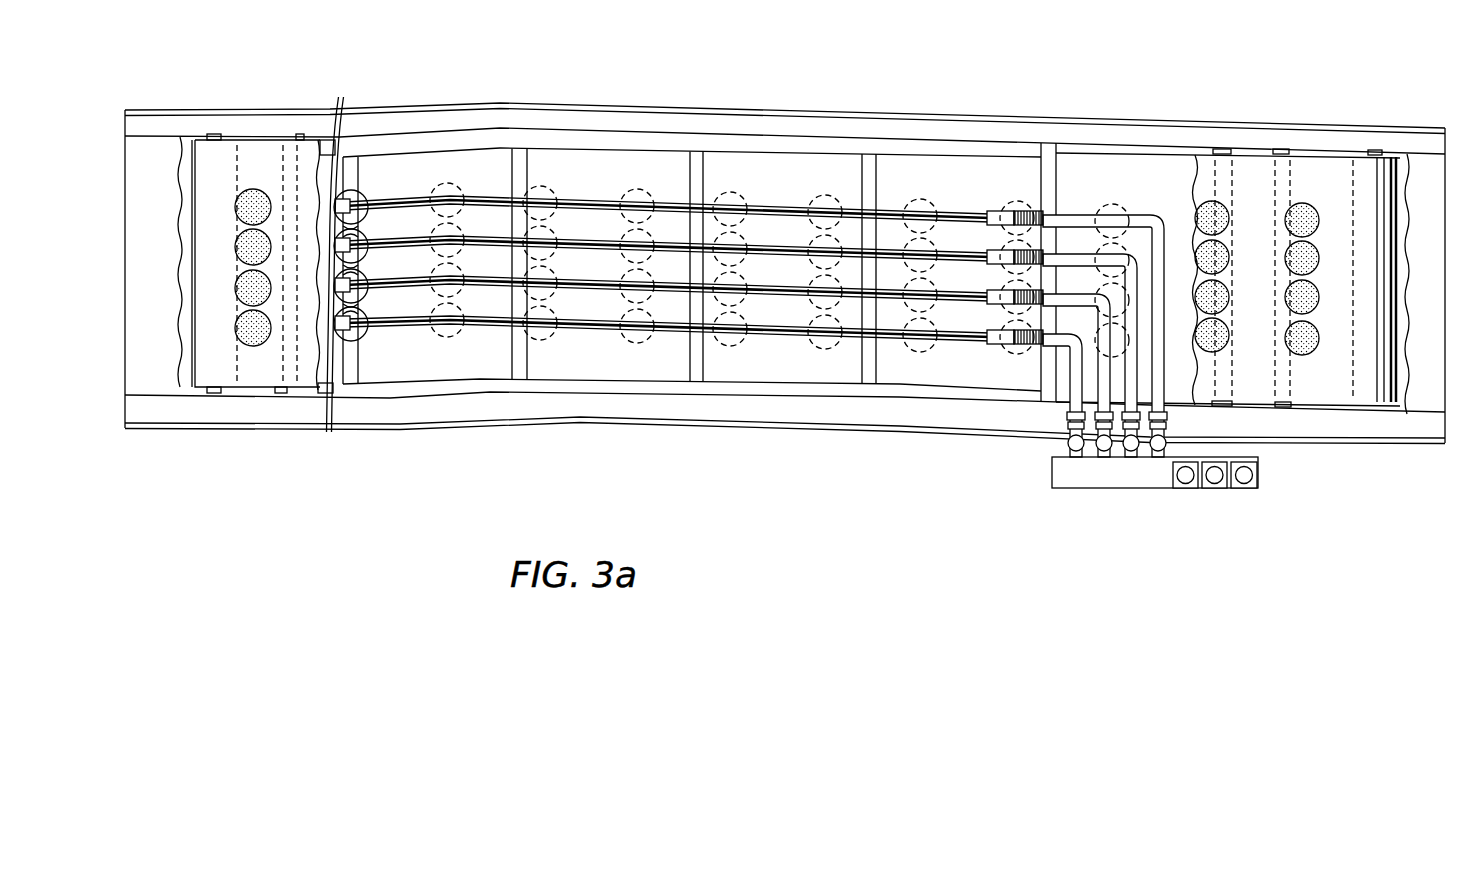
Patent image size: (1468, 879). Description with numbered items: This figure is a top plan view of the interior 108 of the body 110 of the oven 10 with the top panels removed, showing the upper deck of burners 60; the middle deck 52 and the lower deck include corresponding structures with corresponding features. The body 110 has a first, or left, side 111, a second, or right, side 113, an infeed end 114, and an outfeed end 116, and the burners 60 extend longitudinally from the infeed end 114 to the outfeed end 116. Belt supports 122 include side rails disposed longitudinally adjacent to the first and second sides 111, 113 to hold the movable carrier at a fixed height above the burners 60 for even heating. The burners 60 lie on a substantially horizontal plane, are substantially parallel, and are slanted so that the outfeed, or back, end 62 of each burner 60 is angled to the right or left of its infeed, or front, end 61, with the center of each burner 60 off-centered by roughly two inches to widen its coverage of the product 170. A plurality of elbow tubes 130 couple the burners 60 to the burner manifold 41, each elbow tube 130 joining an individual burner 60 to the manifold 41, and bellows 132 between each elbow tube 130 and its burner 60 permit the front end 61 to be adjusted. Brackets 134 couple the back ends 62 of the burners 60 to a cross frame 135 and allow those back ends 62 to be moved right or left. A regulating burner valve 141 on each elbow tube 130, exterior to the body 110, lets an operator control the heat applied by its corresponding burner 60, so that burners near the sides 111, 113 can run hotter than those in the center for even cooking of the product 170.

The oven 10 is at (752, 500).
The burner manifold 41 is at (1140, 490).
The middle deck 52 is at (336, 243).
The burners 60 is at (767, 245).
The front end 61 is at (1017, 256).
The back end 62 is at (331, 265).
The interior 108 is at (1173, 180).
The body 110 is at (673, 104).
The first side 111 is at (391, 428).
The second side 113 is at (460, 107).
The infeed end 114 is at (1445, 392).
The outfeed end 116 is at (118, 157).
The belt supports 122 is at (747, 143).
The elbow tubes 130 is at (1082, 350).
The bellows 132 is at (1028, 262).
The brackets 134 is at (362, 266).
The cross frame 135 is at (362, 167).
The regulating burner valve 141 is at (1066, 443).
The product 170 is at (450, 238).